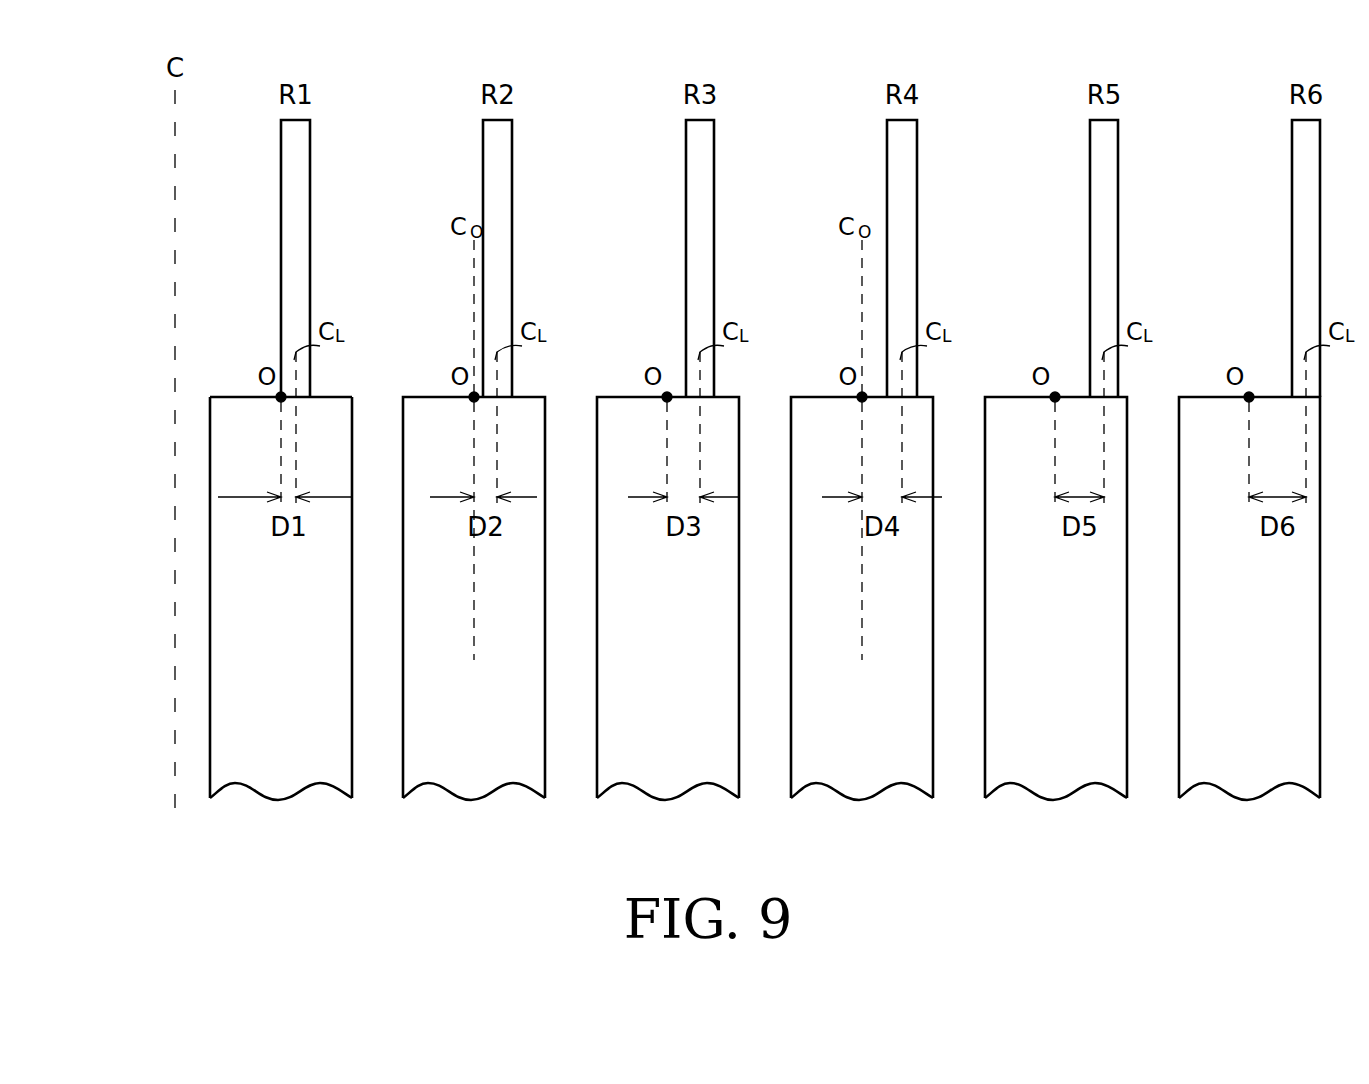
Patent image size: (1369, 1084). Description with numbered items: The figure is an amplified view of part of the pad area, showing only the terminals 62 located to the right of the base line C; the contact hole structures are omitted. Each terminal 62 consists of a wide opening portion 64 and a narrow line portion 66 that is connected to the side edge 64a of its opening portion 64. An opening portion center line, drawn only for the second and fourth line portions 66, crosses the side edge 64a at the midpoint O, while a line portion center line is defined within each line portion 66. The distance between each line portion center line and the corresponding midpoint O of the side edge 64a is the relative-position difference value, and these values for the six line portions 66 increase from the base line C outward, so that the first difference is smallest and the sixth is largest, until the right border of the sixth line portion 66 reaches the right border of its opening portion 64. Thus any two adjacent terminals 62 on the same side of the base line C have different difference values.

The terminal 62 is at (125, 253).
The opening portion 64 is at (210, 596).
The side edge of the opening portion 64a is at (226, 397).
The line portion 66 is at (281, 290).